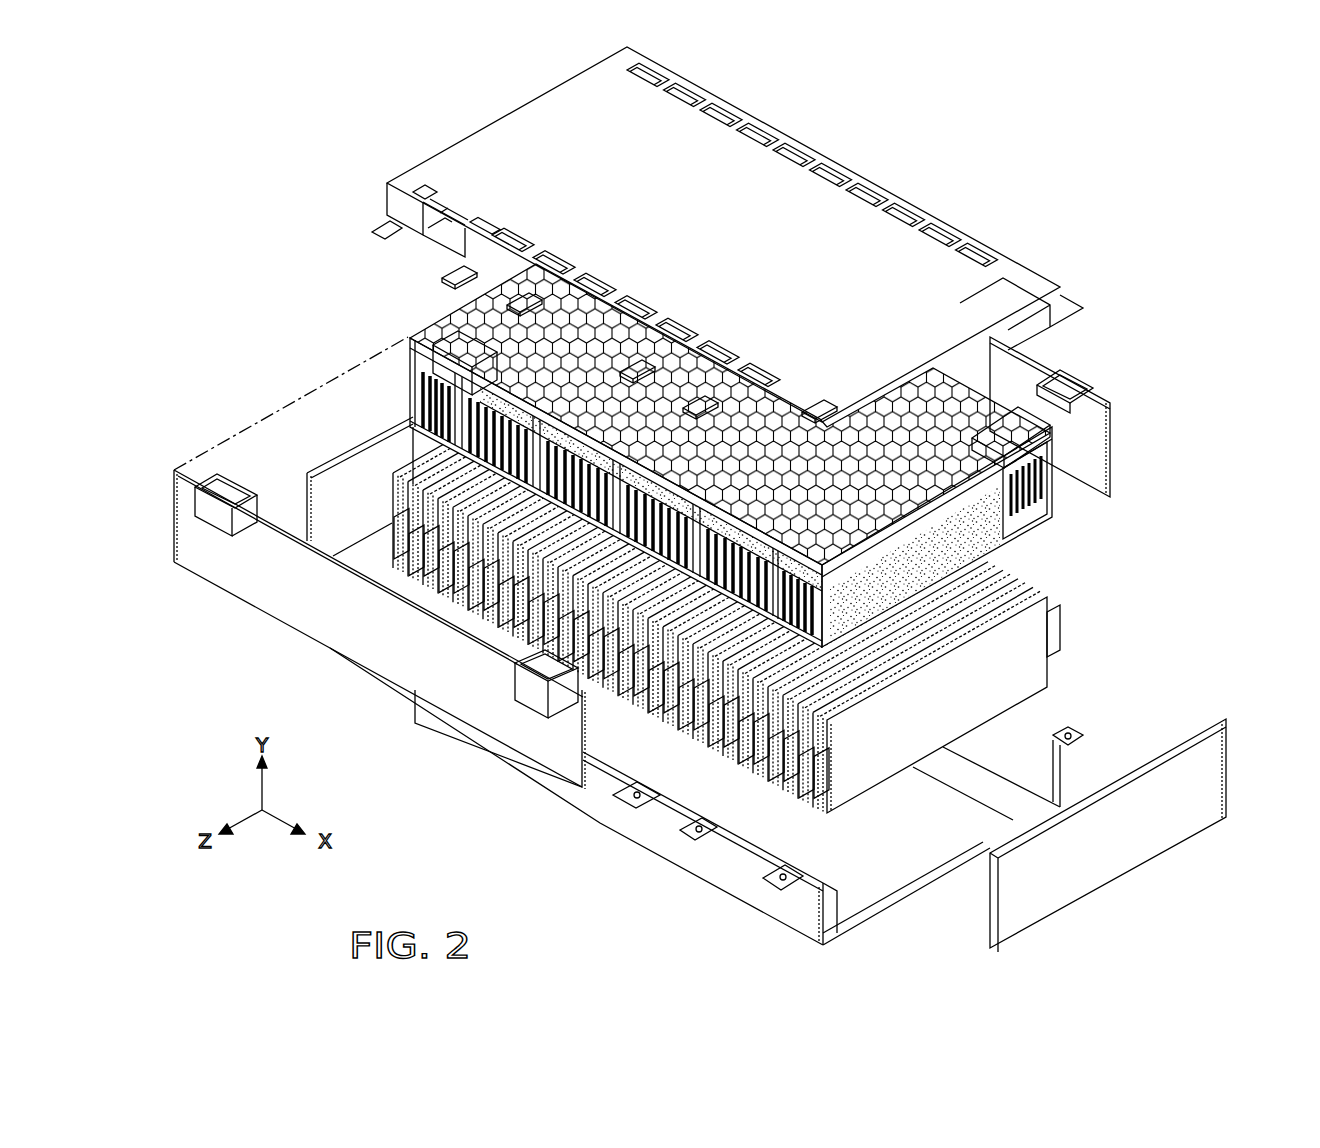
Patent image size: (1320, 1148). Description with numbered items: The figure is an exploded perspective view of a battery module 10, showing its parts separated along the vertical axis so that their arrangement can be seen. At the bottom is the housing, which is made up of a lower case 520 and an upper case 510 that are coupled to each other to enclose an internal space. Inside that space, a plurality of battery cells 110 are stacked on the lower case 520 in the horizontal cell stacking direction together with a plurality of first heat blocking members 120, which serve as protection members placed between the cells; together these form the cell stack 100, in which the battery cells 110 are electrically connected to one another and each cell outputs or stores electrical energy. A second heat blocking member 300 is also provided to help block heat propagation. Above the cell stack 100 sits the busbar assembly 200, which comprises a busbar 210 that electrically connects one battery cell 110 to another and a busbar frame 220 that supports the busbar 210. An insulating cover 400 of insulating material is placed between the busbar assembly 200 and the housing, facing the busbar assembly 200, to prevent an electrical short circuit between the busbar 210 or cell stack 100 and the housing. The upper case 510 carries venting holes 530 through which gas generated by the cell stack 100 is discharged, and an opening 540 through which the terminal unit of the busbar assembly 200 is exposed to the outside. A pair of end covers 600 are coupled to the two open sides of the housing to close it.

The battery module 10 is at (323, 133).
The cell stack 100 is at (792, 650).
The battery cell 110 is at (1047, 688).
The first heat blocking member 120 is at (782, 790).
The busbar assembly 200 is at (733, 452).
The busbar 210 is at (410, 380).
The busbar frame 220 is at (462, 313).
The second heat blocking member 300 is at (1005, 527).
The insulating cover 400 is at (345, 650).
The upper case 510 is at (727, 232).
The lower case 520 is at (912, 872).
The venting hole 530 is at (738, 130).
The opening 540 is at (438, 217).
The end cover 600 is at (343, 470).